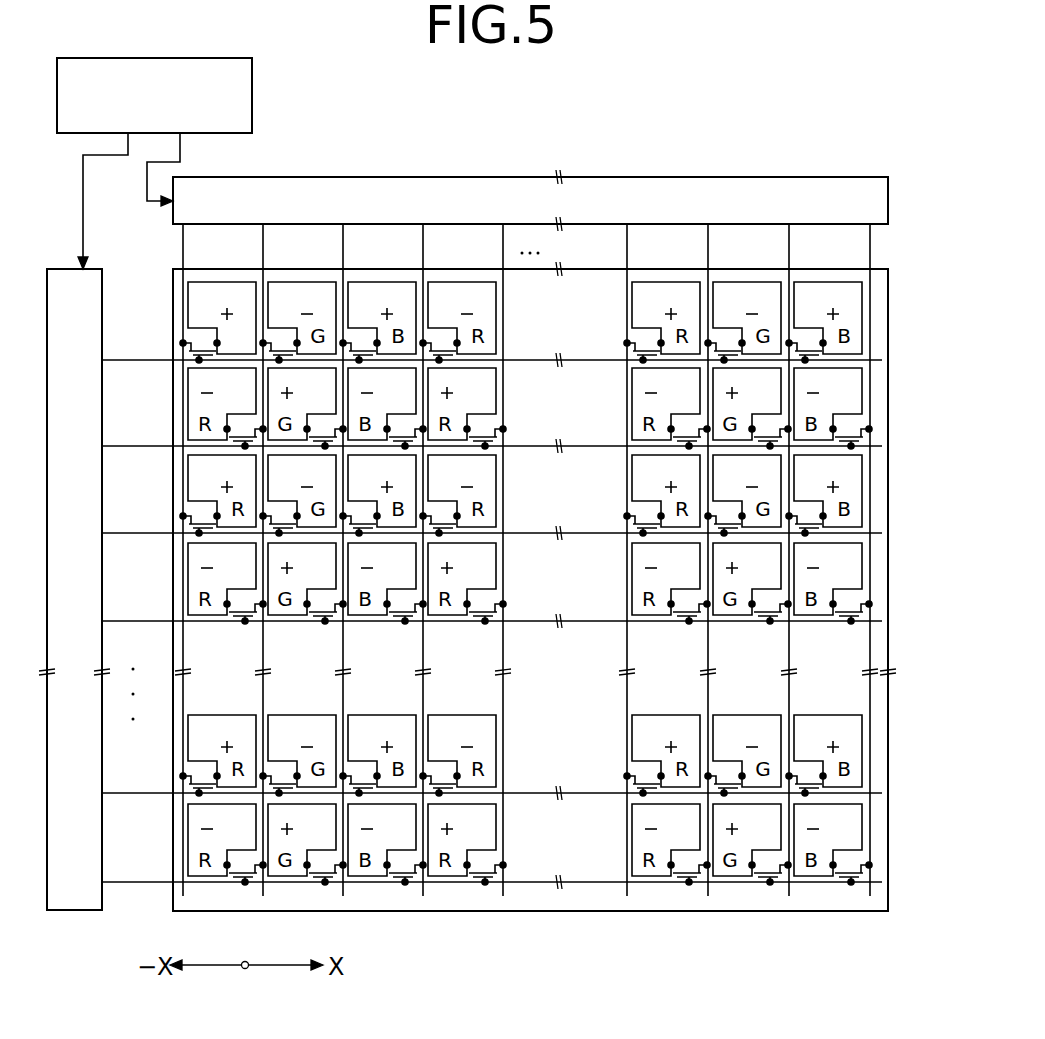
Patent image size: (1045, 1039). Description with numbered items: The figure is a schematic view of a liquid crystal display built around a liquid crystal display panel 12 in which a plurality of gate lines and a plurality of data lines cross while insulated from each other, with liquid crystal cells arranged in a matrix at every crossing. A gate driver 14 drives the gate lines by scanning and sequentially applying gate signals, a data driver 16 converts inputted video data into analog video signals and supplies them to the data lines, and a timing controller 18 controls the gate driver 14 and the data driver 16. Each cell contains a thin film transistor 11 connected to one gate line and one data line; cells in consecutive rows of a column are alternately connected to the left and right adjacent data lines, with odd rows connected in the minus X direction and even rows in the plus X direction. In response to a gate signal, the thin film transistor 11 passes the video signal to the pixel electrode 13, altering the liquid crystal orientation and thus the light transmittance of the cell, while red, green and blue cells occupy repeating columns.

The timing controller 18 is at (254, 76).
The data driver 16 is at (613, 178).
The gate driver 14 is at (86, 910).
The liquid crystal display panel 12 is at (888, 407).
The pixel electrode 13 is at (197, 323).
The thin film transistor 11 is at (176, 360).